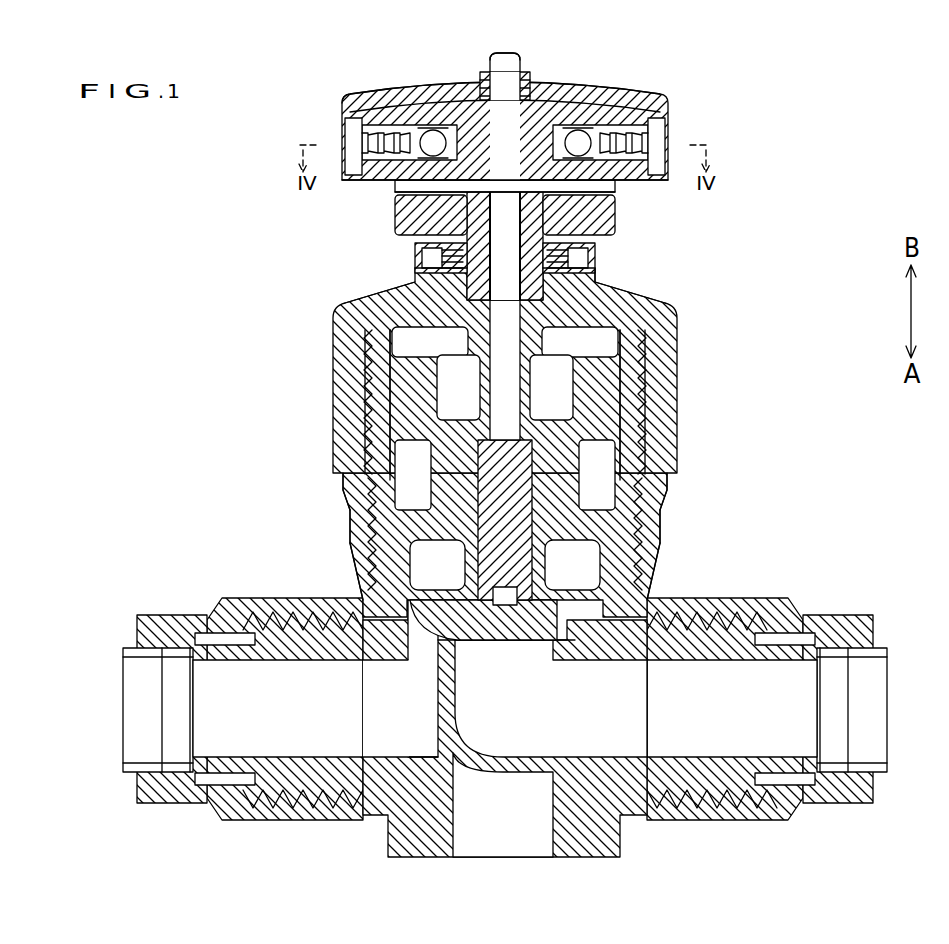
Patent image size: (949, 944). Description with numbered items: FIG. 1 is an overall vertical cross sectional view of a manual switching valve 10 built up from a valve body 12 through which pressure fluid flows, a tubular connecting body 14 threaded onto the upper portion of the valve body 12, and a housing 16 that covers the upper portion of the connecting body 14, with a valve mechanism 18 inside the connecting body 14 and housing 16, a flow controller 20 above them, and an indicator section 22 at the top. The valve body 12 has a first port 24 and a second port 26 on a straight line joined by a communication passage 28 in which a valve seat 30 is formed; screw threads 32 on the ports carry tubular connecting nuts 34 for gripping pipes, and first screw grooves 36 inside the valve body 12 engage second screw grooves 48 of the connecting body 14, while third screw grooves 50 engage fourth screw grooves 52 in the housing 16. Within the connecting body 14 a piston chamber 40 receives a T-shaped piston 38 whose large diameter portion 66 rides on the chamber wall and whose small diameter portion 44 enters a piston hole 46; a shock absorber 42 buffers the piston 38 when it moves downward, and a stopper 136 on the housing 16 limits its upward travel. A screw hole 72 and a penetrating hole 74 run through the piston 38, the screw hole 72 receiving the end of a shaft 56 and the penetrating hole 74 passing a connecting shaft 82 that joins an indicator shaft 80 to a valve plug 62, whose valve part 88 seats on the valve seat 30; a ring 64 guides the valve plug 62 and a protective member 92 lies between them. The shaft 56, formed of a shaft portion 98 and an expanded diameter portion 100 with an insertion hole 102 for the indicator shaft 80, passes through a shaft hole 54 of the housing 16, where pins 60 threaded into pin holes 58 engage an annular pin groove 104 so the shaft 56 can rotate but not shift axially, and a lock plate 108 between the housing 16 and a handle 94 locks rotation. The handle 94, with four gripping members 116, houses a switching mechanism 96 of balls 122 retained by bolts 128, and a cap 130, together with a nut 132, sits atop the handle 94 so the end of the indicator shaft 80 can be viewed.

The manual switching valve 10 is at (820, 102).
The valve body 12 is at (379, 842).
The connecting body 14 is at (633, 532).
The housing 16 is at (686, 305).
The valve mechanism 18 is at (403, 373).
The flow controller 20 is at (604, 70).
The indicator section 22 is at (482, 50).
The first port 24 is at (688, 747).
The second port 26 is at (238, 752).
The communication passage 28 is at (513, 740).
The valve seat 30 is at (550, 633).
The screw threads 32 is at (287, 810).
The connecting nuts 34 is at (185, 617).
The first screw grooves 36 is at (370, 548).
The piston 38 is at (428, 437).
The piston chamber 40 is at (650, 375).
The shock absorber 42 is at (617, 452).
The small diameter portion 44 is at (477, 523).
The piston hole 46 is at (647, 488).
The second screw grooves 48 is at (640, 530).
The third screw grooves 50 is at (660, 407).
The fourth screw grooves 52 is at (373, 407).
The shaft hole 54 is at (480, 318).
The shaft 56 is at (545, 301).
The pin holes 58 is at (595, 258).
The pins 60 is at (420, 258).
The valve plug 62 is at (477, 656).
The ring 64 is at (580, 586).
The large diameter portion 66 is at (600, 377).
The screw hole 72 is at (410, 423).
The penetrating hole 74 is at (617, 425).
The indicator shaft 80 is at (500, 210).
The connecting shaft 82 is at (480, 556).
The valve part 88 is at (507, 642).
The protective member 92 is at (433, 606).
The handle 94 is at (341, 100).
The switching mechanism 96 is at (637, 180).
The shaft portion 98 is at (473, 282).
The expanded diameter portion 100 is at (547, 130).
The insertion hole 102 is at (617, 337).
The pin groove 104 is at (413, 232).
The lock plate 108 is at (627, 221).
The gripping members 116 is at (370, 112).
The balls 122 is at (368, 110).
The bolts 128 is at (345, 140).
The cap 130 is at (505, 50).
The nut 132 is at (485, 78).
The stopper 136 is at (370, 340).